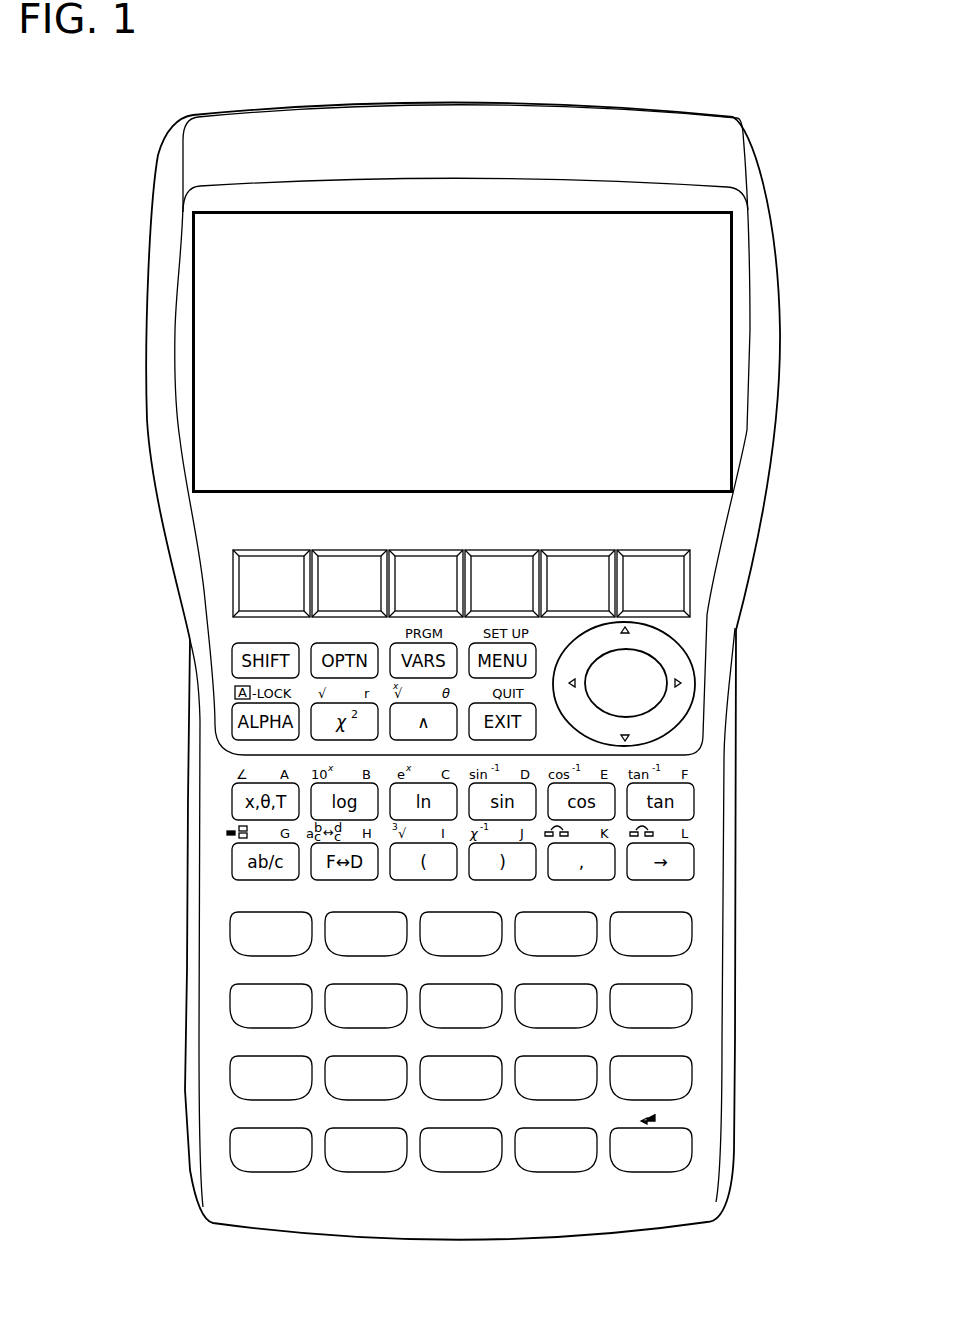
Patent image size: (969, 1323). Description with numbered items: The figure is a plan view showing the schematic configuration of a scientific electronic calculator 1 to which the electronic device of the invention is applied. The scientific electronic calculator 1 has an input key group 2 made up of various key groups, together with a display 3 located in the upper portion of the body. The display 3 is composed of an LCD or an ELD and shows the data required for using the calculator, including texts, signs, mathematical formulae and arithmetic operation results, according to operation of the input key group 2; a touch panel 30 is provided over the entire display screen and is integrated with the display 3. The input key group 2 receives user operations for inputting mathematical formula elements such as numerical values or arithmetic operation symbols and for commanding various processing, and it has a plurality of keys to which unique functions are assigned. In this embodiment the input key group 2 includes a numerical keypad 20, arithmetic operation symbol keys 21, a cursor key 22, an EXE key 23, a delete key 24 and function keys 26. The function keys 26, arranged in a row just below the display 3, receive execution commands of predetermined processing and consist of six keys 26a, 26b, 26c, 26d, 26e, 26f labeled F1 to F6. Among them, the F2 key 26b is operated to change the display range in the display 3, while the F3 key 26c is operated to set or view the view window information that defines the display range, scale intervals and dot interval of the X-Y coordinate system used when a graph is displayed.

The scientific electronic calculator 1 is at (436, 645).
The input key group 2 is at (410, 894).
The display 3 is at (518, 352).
The touch panel 30 is at (495, 352).
The numerical keypad 20 is at (450, 1014).
The arithmetic operation symbol keys 21 is at (505, 469).
The cursor key 22 is at (678, 684).
The EXE key 23 is at (697, 1146).
The delete key 24 is at (659, 906).
The function keys 26 is at (508, 527).
The F1 key 26a is at (256, 527).
The F2 key 26b is at (332, 527).
The F3 key 26c is at (409, 527).
The F4 key 26d is at (485, 527).
The F5 key 26e is at (561, 527).
The F6 key 26f is at (637, 527).